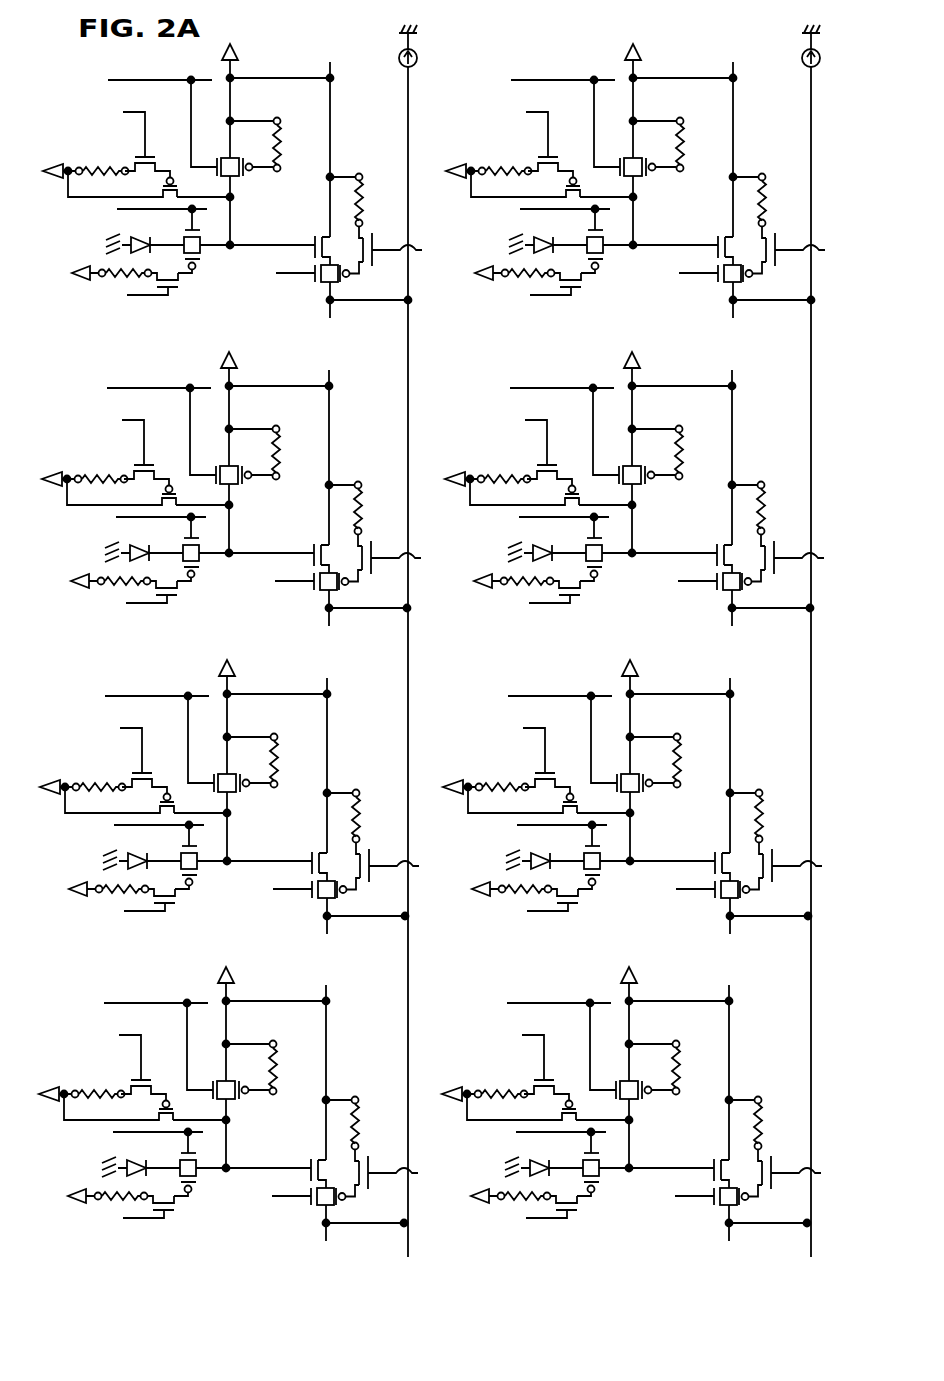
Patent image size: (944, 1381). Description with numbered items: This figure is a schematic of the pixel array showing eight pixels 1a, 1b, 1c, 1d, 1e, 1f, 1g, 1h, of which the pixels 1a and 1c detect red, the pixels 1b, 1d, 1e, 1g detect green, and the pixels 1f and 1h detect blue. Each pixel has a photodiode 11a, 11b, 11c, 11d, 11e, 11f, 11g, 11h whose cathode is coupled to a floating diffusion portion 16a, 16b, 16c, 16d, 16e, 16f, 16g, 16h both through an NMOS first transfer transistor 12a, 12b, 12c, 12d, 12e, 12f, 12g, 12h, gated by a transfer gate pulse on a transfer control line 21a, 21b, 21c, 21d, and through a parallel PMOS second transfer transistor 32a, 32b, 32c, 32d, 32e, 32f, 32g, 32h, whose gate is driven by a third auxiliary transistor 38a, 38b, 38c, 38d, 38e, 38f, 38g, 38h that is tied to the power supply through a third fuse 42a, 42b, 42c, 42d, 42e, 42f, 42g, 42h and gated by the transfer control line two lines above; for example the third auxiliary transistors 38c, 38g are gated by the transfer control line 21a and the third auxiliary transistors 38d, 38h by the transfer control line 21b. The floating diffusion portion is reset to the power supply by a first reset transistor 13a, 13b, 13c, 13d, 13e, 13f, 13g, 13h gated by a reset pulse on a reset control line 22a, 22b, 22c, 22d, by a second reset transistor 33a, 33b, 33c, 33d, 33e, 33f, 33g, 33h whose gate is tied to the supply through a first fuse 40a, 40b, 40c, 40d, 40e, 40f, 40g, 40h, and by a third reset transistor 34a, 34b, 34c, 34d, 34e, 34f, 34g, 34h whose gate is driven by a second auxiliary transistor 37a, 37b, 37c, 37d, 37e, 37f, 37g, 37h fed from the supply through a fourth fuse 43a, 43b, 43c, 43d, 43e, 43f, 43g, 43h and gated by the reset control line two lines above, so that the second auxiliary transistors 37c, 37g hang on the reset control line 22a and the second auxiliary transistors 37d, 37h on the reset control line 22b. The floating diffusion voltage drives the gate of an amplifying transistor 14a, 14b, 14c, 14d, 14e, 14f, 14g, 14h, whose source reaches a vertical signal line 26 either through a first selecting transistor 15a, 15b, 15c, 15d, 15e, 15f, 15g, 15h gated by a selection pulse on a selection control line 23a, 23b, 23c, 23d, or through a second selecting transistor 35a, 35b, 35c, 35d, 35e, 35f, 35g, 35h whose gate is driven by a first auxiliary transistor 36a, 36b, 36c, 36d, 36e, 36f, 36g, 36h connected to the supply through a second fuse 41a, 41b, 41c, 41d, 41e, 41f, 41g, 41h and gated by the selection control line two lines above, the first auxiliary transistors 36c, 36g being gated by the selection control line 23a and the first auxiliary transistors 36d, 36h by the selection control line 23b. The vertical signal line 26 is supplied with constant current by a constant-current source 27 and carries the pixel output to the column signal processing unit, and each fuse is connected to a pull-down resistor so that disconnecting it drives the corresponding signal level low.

The pixel 1a is at (64, 63).
The pixel 1b is at (239, 492).
The pixel 1c is at (237, 800).
The pixel 1d is at (236, 1107).
The pixel 1e is at (643, 184).
The pixel 1f is at (642, 492).
The pixel 1g is at (640, 800).
The pixel 1h is at (639, 1107).
The photoelectric conversion element 11a is at (136, 241).
The photoelectric conversion element 11b is at (144, 542).
The photoelectric conversion element 11c is at (142, 850).
The photoelectric conversion element 11d is at (141, 1157).
The photoelectric conversion element 11e is at (548, 234).
The photoelectric conversion element 11f is at (547, 542).
The photoelectric conversion element 11g is at (545, 850).
The photoelectric conversion element 11h is at (544, 1157).
The first transfer transistor 12a is at (203, 230).
The first transfer transistor 12b is at (225, 533).
The first transfer transistor 12c is at (223, 841).
The first transfer transistor 12d is at (222, 1148).
The first transfer transistor 12e is at (629, 225).
The first transfer transistor 12f is at (628, 533).
The first transfer transistor 12g is at (626, 841).
The first transfer transistor 12h is at (625, 1148).
The first reset transistor 13a is at (218, 158).
The first reset transistor 13b is at (214, 436).
The first reset transistor 13c is at (212, 744).
The first reset transistor 13d is at (211, 1051).
The first reset transistor 13e is at (618, 128).
The first reset transistor 13f is at (617, 436).
The first reset transistor 13g is at (615, 744).
The first reset transistor 13h is at (614, 1051).
The amplifying transistor 14a is at (313, 237).
The amplifying transistor 14b is at (308, 539).
The amplifying transistor 14c is at (306, 847).
The amplifying transistor 14d is at (305, 1154).
The amplifying transistor 14e is at (712, 231).
The amplifying transistor 14f is at (711, 539).
The amplifying transistor 14g is at (709, 847).
The amplifying transistor 14h is at (708, 1154).
The first selecting transistor 15a is at (324, 286).
The first selecting transistor 15b is at (314, 604).
The first selecting transistor 15c is at (312, 912).
The first selecting transistor 15d is at (311, 1219).
The first selecting transistor 15e is at (718, 296).
The first selecting transistor 15f is at (717, 604).
The first selecting transistor 15g is at (715, 912).
The first selecting transistor 15h is at (714, 1219).
The floating diffusion portion 16a is at (236, 245).
The floating diffusion portion 16b is at (256, 540).
The floating diffusion portion 16c is at (254, 848).
The floating diffusion portion 16d is at (253, 1155).
The floating diffusion portion 16e is at (660, 232).
The floating diffusion portion 16f is at (659, 540).
The floating diffusion portion 16g is at (657, 848).
The floating diffusion portion 16h is at (656, 1155).
The transfer control line 21a is at (132, 196).
The transfer control line 21b is at (323, 493).
The transfer control line 21c is at (321, 801).
The transfer control line 21d is at (320, 1108).
The reset control line 22a is at (134, 80).
The reset control line 22b is at (341, 378).
The reset control line 22c is at (339, 686).
The reset control line 22d is at (338, 993).
The selection control line 23a is at (284, 275).
The selection control line 23b is at (472, 593).
The selection control line 23c is at (470, 901).
The selection control line 23d is at (469, 1208).
The vertical signal line 26 is at (406, 98).
The constant-current source 27 is at (399, 57).
The second transfer transistor 32a is at (200, 258).
The second transfer transistor 32b is at (201, 590).
The second transfer transistor 32c is at (199, 898).
The second transfer transistor 32d is at (198, 1205).
The second transfer transistor 32e is at (605, 282).
The second transfer transistor 32f is at (604, 590).
The second transfer transistor 32g is at (602, 898).
The second transfer transistor 32h is at (601, 1205).
The second reset transistor 33a is at (248, 150).
The second reset transistor 33b is at (252, 459).
The second reset transistor 33c is at (250, 767).
The second reset transistor 33d is at (249, 1074).
The second reset transistor 33e is at (656, 151).
The second reset transistor 33f is at (655, 459).
The second reset transistor 33g is at (653, 767).
The second reset transistor 33h is at (652, 1074).
The third reset transistor 34a is at (233, 197).
The third reset transistor 34b is at (223, 500).
The third reset transistor 34c is at (221, 808).
The third reset transistor 34d is at (220, 1115).
The third reset transistor 34e is at (627, 192).
The third reset transistor 34f is at (626, 500).
The third reset transistor 34g is at (624, 808).
The third reset transistor 34h is at (623, 1115).
The second selecting transistor 35a is at (342, 285).
The second selecting transistor 35b is at (367, 590).
The second selecting transistor 35c is at (365, 898).
The second selecting transistor 35d is at (364, 1205).
The second selecting transistor 35e is at (771, 282).
The second selecting transistor 35f is at (770, 590).
The second selecting transistor 35g is at (768, 898).
The second selecting transistor 35h is at (767, 1205).
The first auxiliary transistor 36a is at (380, 228).
The first auxiliary transistor 36b is at (389, 544).
The first auxiliary transistor 36c is at (387, 852).
The first auxiliary transistor 36d is at (386, 1159).
The first auxiliary transistor 36e is at (793, 236).
The first auxiliary transistor 36f is at (792, 544).
The first auxiliary transistor 36g is at (790, 852).
The first auxiliary transistor 36h is at (789, 1159).
The second auxiliary transistor 37a is at (160, 165).
The second auxiliary transistor 37b is at (153, 452).
The second auxiliary transistor 37c is at (151, 760).
The second auxiliary transistor 37d is at (150, 1067).
The second auxiliary transistor 37e is at (557, 144).
The second auxiliary transistor 37f is at (556, 452).
The second auxiliary transistor 37g is at (554, 760).
The second auxiliary transistor 37h is at (553, 1067).
The third auxiliary transistor 38a is at (179, 284).
The third auxiliary transistor 38b is at (164, 610).
The third auxiliary transistor 38c is at (162, 918).
The third auxiliary transistor 38d is at (161, 1225).
The third auxiliary transistor 38e is at (568, 302).
The third auxiliary transistor 38f is at (567, 610).
The third auxiliary transistor 38g is at (565, 918).
The third auxiliary transistor 38h is at (564, 1225).
The first fuse 40a is at (282, 142).
The first fuse 40b is at (274, 452).
The first fuse 40c is at (272, 760).
The first fuse 40d is at (271, 1067).
The first fuse 40e is at (678, 144).
The first fuse 40f is at (677, 452).
The first fuse 40g is at (675, 760).
The first fuse 40h is at (674, 1067).
The second fuse 41a is at (362, 193).
The second fuse 41b is at (363, 504).
The second fuse 41c is at (361, 812).
The second fuse 41d is at (360, 1119).
The second fuse 41e is at (767, 196).
The second fuse 41f is at (766, 504).
The second fuse 41g is at (764, 812).
The second fuse 41h is at (763, 1119).
The third fuse 42a is at (137, 277).
The third fuse 42b is at (132, 605).
The third fuse 42c is at (130, 913).
The third fuse 42d is at (129, 1220).
The third fuse 42e is at (536, 297).
The third fuse 42f is at (535, 605).
The third fuse 42g is at (533, 913).
The third fuse 42h is at (532, 1220).
The fourth fuse 43a is at (97, 157).
The fourth fuse 43b is at (101, 463).
The fourth fuse 43c is at (99, 771).
The fourth fuse 43d is at (98, 1078).
The fourth fuse 43e is at (505, 155).
The fourth fuse 43f is at (504, 463).
The fourth fuse 43g is at (502, 771).
The fourth fuse 43h is at (501, 1078).